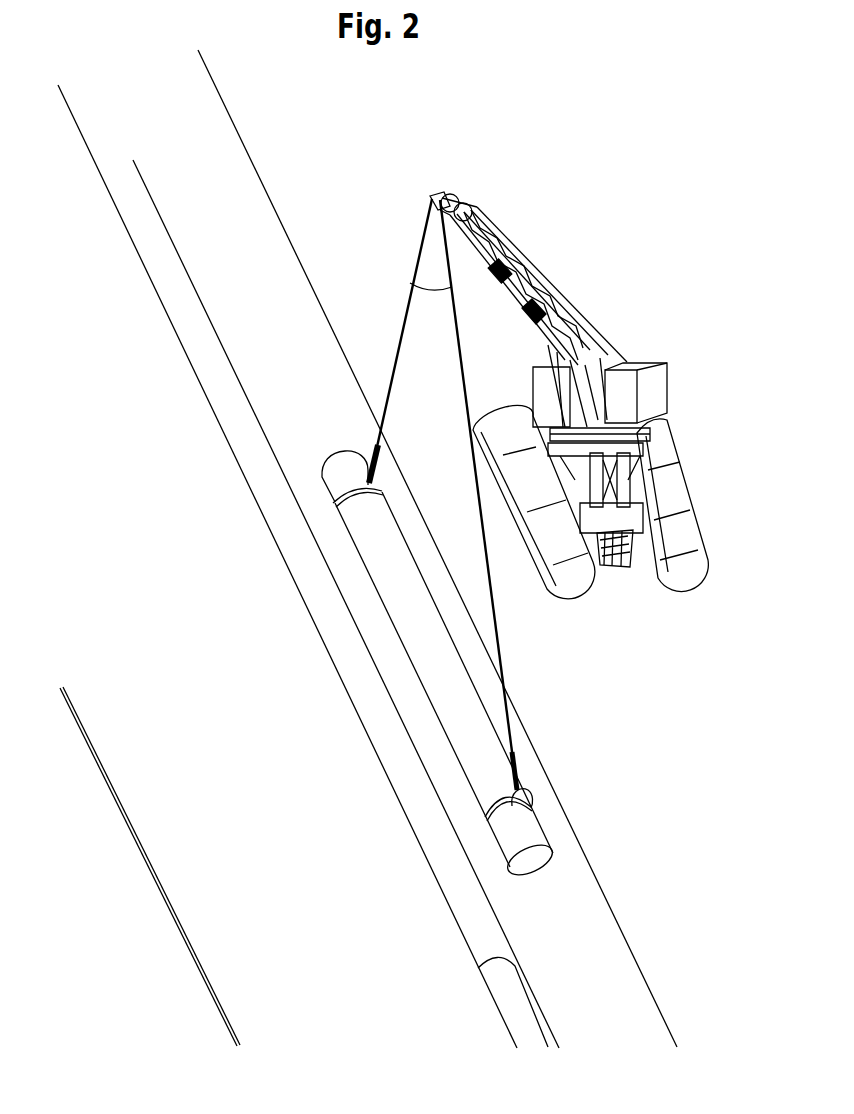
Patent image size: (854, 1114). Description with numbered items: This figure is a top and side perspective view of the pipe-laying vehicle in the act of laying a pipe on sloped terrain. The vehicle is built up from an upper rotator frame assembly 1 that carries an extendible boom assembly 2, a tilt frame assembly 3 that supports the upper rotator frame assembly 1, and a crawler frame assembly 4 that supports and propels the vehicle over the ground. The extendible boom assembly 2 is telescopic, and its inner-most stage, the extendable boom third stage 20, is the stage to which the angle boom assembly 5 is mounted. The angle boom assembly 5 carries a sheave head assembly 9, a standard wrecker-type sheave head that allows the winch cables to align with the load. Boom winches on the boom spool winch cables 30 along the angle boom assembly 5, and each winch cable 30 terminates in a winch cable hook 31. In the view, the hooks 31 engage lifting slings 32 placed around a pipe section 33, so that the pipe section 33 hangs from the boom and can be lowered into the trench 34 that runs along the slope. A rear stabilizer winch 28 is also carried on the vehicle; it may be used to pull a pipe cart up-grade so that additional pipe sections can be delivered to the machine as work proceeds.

The upper rotator frame assembly 1 is at (667, 368).
The extendible boom assembly 2 is at (570, 315).
The tilt frame assembly 3 is at (678, 430).
The crawler frame assembly 4 is at (577, 593).
The angle boom assembly 5 is at (465, 194).
The sheave head assembly 9 is at (460, 197).
The extendable boom third stage 20 is at (492, 224).
The rear stabilizer winch 28 is at (613, 563).
The winch cable 30 is at (410, 283).
The winch cable hook 31 is at (386, 480).
The lifting sling 32 is at (333, 503).
The pipe section 33 is at (393, 628).
The trench 34 is at (258, 323).